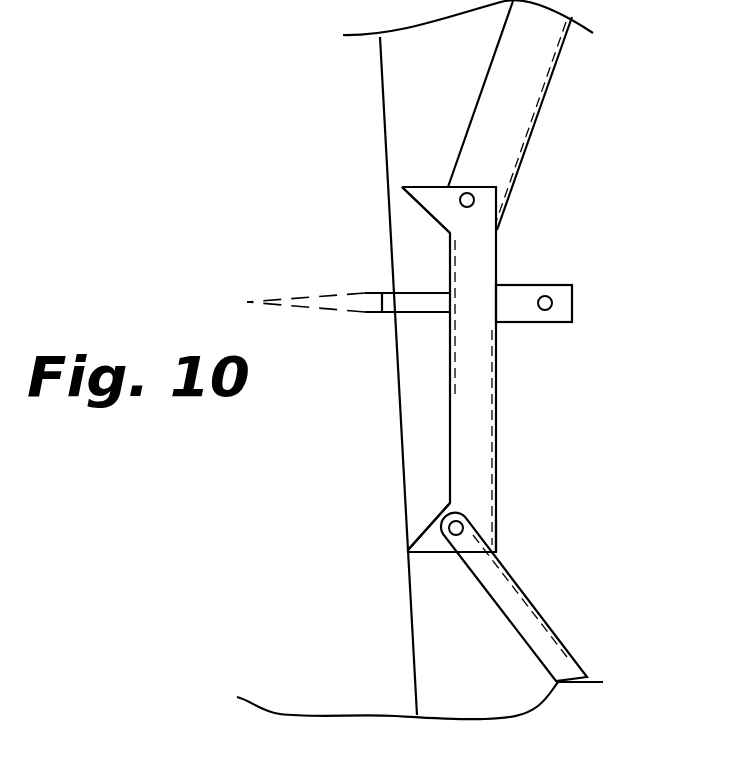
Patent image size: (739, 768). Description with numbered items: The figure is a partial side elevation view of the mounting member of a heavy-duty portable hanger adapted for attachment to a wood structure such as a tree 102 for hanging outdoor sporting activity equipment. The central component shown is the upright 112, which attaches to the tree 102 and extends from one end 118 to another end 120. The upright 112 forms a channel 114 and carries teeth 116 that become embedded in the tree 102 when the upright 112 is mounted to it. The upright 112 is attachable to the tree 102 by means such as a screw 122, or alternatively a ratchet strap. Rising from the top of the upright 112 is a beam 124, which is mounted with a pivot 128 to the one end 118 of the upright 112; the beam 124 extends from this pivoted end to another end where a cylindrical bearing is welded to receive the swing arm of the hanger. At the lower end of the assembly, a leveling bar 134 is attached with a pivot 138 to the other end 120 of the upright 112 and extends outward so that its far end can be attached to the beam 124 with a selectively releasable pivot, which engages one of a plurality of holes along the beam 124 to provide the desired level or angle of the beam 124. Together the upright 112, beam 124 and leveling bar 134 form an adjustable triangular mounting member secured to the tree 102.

The tree 102 is at (385, 105).
The upright 112 is at (494, 385).
The channel 114 is at (450, 268).
The teeth 116 is at (418, 185).
The one end 118 is at (494, 186).
The other end 120 is at (497, 554).
The screw 122 is at (553, 285).
The beam 124 is at (552, 83).
The pivot 128 is at (469, 192).
The leveling bar 134 is at (560, 640).
The pivot 138 is at (465, 523).